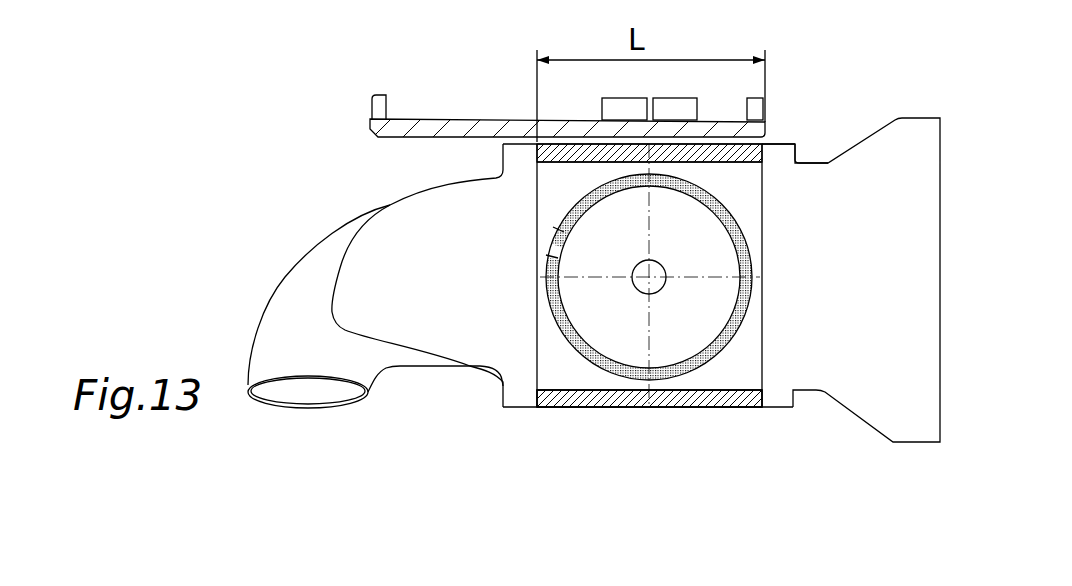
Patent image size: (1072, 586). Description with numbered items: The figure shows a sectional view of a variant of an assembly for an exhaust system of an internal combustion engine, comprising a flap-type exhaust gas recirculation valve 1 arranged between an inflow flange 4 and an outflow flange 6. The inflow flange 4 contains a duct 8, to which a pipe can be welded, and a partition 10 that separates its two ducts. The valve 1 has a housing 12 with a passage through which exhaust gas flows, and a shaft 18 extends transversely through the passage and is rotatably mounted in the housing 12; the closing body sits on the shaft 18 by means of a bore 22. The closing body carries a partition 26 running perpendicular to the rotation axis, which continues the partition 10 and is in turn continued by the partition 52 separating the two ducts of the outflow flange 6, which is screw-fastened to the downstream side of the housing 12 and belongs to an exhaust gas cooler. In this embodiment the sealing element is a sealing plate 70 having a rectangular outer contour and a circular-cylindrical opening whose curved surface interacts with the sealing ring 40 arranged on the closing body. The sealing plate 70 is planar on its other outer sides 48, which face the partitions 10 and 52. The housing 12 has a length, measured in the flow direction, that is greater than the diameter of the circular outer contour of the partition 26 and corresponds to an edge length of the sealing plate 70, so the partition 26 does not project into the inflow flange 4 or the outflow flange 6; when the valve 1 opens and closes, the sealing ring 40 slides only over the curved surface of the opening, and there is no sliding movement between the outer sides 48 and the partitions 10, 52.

The valve 1 is at (563, 407).
The inflow flange 4 is at (295, 270).
The outflow flange 6 is at (941, 395).
The duct 8 is at (310, 400).
The partition 10 is at (437, 230).
The housing 12 is at (633, 400).
The shaft 18 is at (640, 278).
The bore 22 is at (667, 288).
The partition 26 is at (797, 170).
The sealing ring 40 is at (698, 233).
The outer sides 48 is at (577, 162).
The partition 52 is at (925, 260).
The sealing plate 70 is at (708, 378).